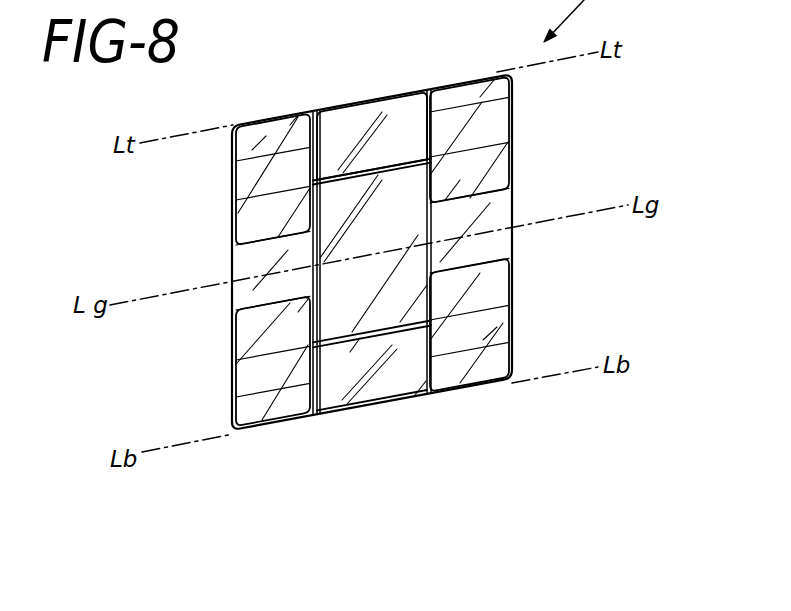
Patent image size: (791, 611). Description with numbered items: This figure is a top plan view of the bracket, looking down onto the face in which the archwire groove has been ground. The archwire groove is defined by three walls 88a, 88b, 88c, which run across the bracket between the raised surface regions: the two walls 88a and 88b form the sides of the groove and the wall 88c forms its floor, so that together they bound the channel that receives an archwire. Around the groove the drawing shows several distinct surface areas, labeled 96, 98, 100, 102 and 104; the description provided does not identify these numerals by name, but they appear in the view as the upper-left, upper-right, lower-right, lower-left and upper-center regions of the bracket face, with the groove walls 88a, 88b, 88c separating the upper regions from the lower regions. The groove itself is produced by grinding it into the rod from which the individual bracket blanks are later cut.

The archwire groove wall 88a is at (240, 250).
The archwire groove wall 88b is at (246, 300).
The archwire groove wall 88c is at (250, 259).
The upper left pad 96 is at (272, 113).
The upper right pad 98 is at (470, 75).
The lower right pad 100 is at (470, 393).
The lower left pad 102 is at (283, 428).
The upper center pad 104 is at (360, 83).